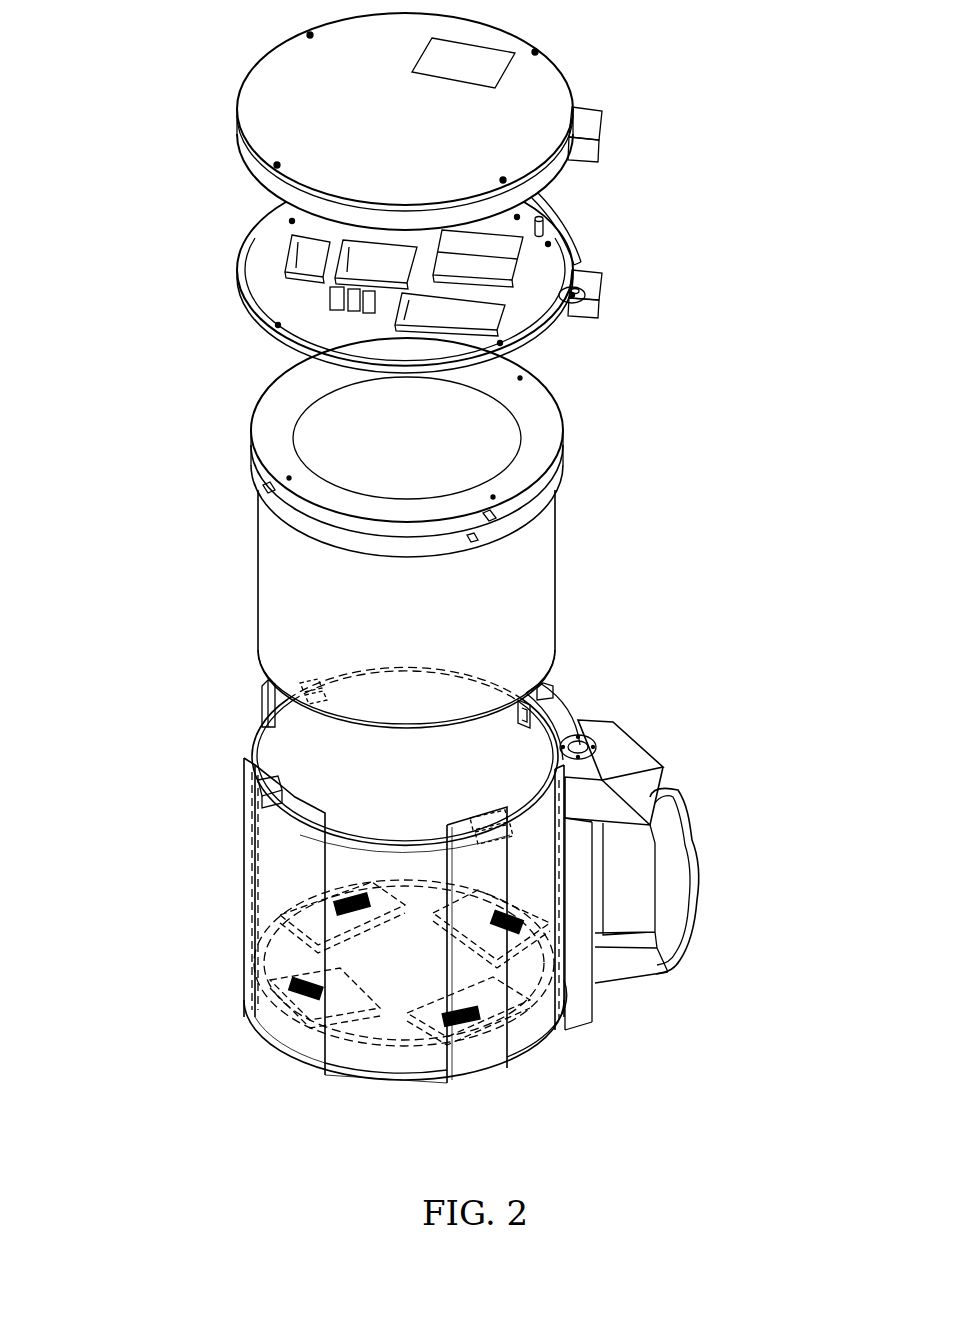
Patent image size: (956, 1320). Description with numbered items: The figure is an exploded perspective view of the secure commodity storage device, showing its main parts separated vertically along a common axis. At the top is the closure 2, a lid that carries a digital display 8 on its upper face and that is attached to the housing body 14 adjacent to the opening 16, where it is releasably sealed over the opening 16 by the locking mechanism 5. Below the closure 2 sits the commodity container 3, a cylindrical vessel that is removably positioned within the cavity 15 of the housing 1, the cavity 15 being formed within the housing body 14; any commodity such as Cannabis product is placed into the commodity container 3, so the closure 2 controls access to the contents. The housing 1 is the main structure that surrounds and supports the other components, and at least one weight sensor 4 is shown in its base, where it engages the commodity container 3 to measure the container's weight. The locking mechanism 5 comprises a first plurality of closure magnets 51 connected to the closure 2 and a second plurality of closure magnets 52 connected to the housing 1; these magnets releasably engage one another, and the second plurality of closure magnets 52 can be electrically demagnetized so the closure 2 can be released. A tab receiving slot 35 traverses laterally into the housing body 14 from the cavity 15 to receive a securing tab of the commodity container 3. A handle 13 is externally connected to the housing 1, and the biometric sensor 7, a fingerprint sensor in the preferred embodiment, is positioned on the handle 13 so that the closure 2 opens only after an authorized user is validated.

The housing 1 is at (140, 830).
The closure 2 is at (166, 152).
The commodity container 3 is at (150, 475).
The weight sensor 4 is at (280, 997).
The locking mechanism 5 is at (560, 231).
The biometric sensor 7 is at (618, 752).
The digital display 8 is at (435, 72).
The handle 13 is at (668, 850).
The housing body 14 is at (262, 730).
The cavity 15 is at (356, 812).
The opening 16 is at (411, 770).
The tab receiving slot 35 is at (520, 735).
The first plurality of closure magnets 51 is at (548, 205).
The second plurality of closure magnets 52 is at (543, 690).